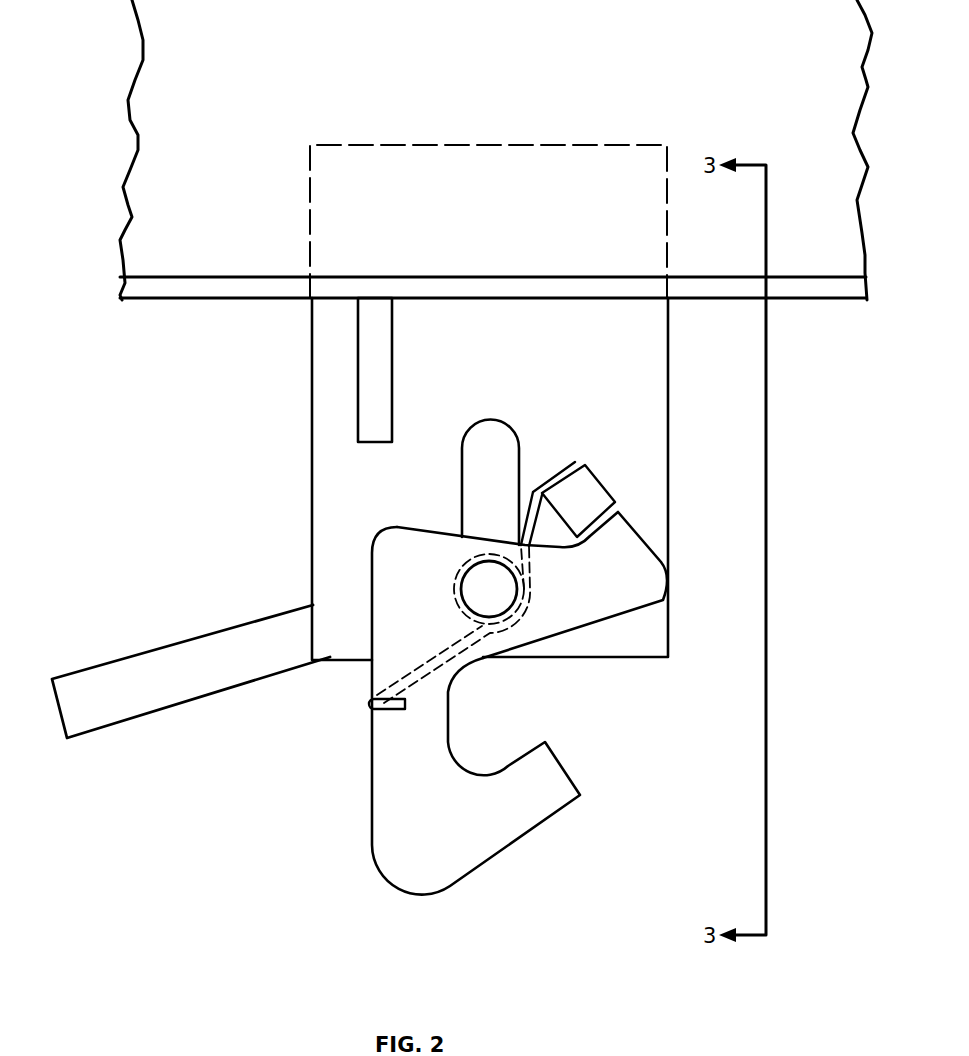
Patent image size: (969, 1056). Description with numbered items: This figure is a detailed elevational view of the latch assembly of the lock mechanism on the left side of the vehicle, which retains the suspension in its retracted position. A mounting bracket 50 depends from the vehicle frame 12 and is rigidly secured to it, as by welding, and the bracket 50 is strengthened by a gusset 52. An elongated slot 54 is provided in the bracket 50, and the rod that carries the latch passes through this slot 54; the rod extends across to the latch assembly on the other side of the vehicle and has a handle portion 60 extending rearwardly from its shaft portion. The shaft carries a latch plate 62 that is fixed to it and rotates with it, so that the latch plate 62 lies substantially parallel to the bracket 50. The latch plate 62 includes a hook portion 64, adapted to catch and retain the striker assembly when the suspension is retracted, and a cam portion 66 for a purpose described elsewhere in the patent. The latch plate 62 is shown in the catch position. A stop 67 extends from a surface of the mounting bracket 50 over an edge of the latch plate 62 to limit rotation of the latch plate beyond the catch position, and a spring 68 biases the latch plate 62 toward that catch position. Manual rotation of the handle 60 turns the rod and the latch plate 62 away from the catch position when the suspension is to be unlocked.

The frame 12 is at (143, 187).
The mounting bracket 50 is at (335, 366).
The gusset 52 is at (383, 330).
The elongated slot 54 is at (482, 468).
The handle portion 60 is at (167, 663).
The latch plate 62 is at (509, 674).
The hook portion 64 is at (395, 782).
The cam portion 66 is at (640, 575).
The stop 67 is at (590, 493).
The spring 68 is at (423, 675).